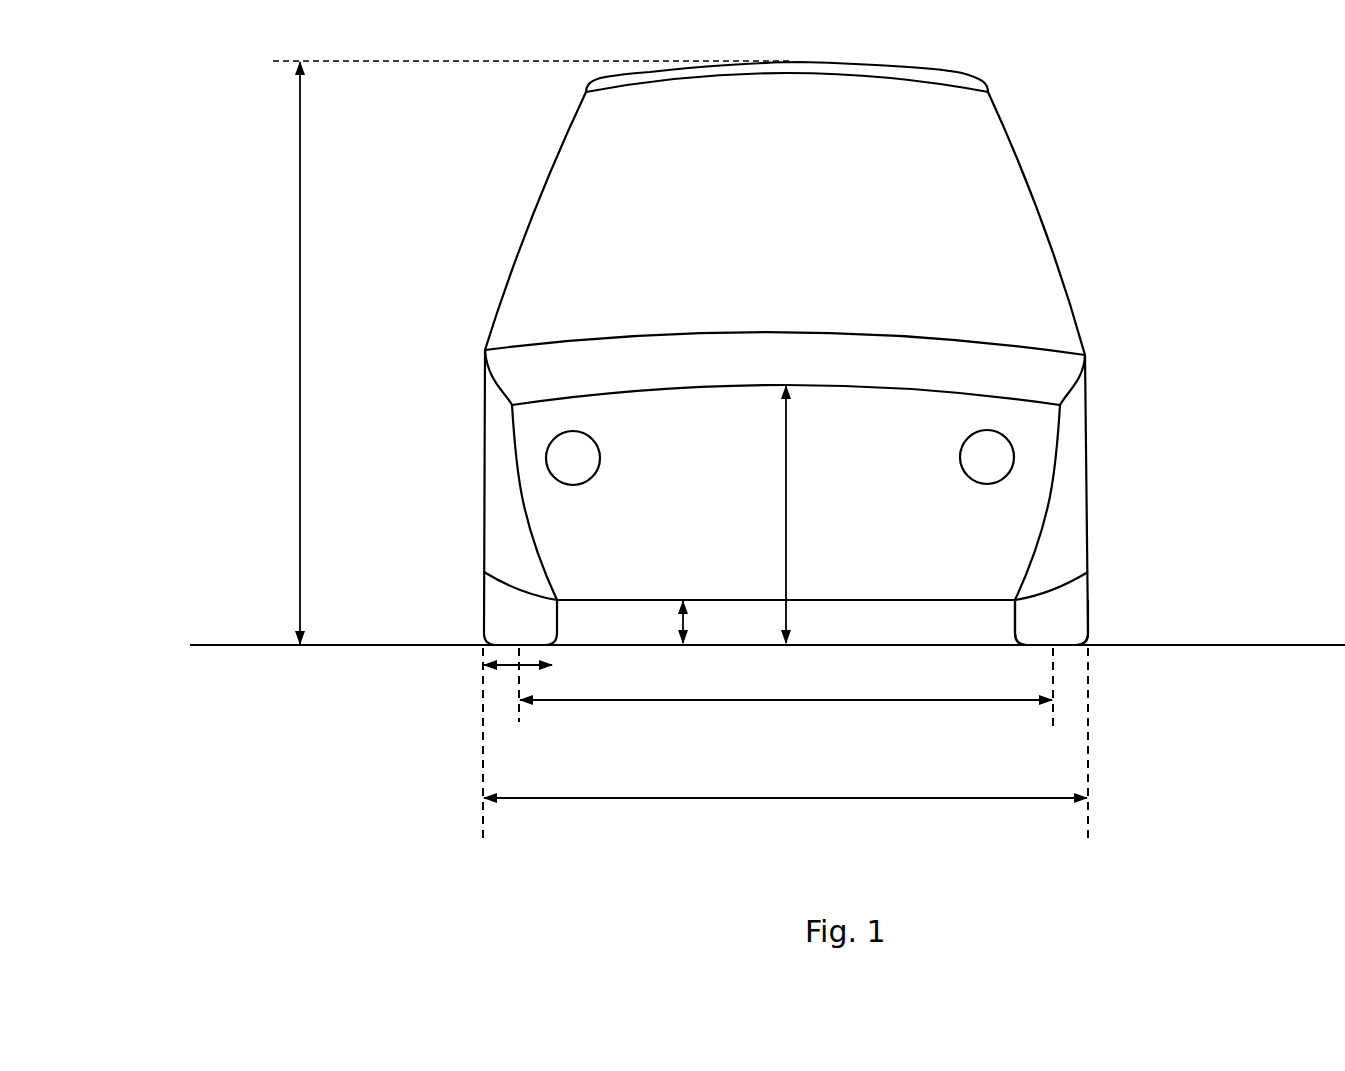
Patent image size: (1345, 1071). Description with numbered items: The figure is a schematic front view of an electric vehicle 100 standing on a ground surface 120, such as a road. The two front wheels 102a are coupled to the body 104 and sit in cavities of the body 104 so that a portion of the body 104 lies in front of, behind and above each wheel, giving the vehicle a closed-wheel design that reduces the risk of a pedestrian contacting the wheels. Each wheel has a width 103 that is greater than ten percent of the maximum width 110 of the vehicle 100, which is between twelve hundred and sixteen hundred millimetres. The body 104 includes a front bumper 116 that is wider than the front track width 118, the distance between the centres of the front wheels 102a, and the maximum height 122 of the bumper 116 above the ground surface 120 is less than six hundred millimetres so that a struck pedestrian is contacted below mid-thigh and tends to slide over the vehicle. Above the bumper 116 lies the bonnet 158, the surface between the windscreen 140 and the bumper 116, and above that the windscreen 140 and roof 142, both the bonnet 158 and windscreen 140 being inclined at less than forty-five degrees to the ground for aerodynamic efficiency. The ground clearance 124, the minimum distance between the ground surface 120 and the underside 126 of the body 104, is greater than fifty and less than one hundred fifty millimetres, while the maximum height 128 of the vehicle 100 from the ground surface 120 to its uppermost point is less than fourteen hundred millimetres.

The electric vehicle 100 is at (835, 357).
The front wheels 102a is at (1090, 604).
The wheel width 103 is at (512, 668).
The body 104 is at (1090, 410).
The maximum width 110 is at (650, 800).
The front bumper 116 is at (525, 512).
The front track width 118 is at (757, 702).
The ground surface 120 is at (260, 650).
The maximum height of the bumper 122 is at (786, 528).
The ground clearance 124 is at (688, 622).
The underside 126 is at (850, 600).
The maximum height 128 is at (298, 332).
The windscreen 140 is at (585, 235).
The roof 142 is at (960, 72).
The bonnet 158 is at (553, 358).